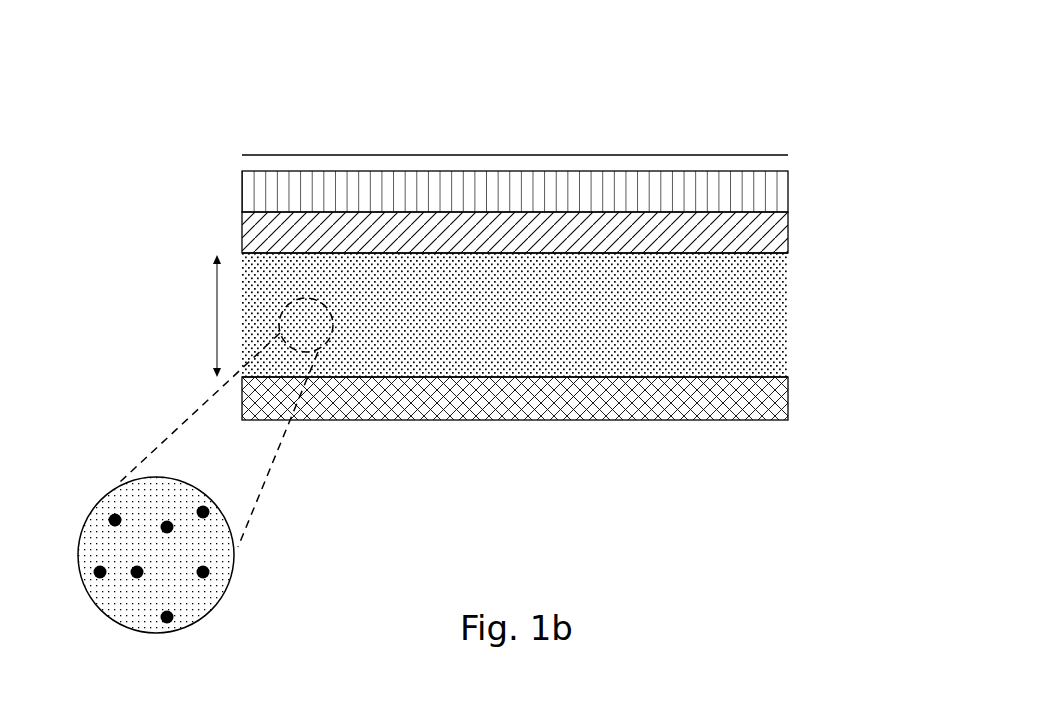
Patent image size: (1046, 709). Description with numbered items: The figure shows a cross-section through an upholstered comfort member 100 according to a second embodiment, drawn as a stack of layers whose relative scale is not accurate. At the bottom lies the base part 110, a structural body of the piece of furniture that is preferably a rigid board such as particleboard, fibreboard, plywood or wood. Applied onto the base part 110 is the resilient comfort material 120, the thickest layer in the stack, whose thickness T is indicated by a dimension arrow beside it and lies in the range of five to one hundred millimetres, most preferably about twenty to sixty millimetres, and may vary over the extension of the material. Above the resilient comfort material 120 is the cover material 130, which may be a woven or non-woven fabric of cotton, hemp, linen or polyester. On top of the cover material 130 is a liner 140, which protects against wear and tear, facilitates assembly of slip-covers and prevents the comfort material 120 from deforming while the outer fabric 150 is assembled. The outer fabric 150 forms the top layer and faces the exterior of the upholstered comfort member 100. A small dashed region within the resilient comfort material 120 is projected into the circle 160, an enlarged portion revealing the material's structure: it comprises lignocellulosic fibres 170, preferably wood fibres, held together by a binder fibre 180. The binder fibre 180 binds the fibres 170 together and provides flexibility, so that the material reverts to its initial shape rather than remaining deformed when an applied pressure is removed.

The upholstered comfort member 100 is at (196, 211).
The base part 110 is at (438, 410).
The resilient comfort material 120 is at (688, 325).
The cover material 130 is at (677, 240).
The liner 140 is at (352, 190).
The outer fabric 150 is at (550, 167).
The circle 160 is at (177, 486).
The fibres 170 is at (175, 565).
The binder fibre 180 is at (102, 580).
The thickness T is at (208, 316).